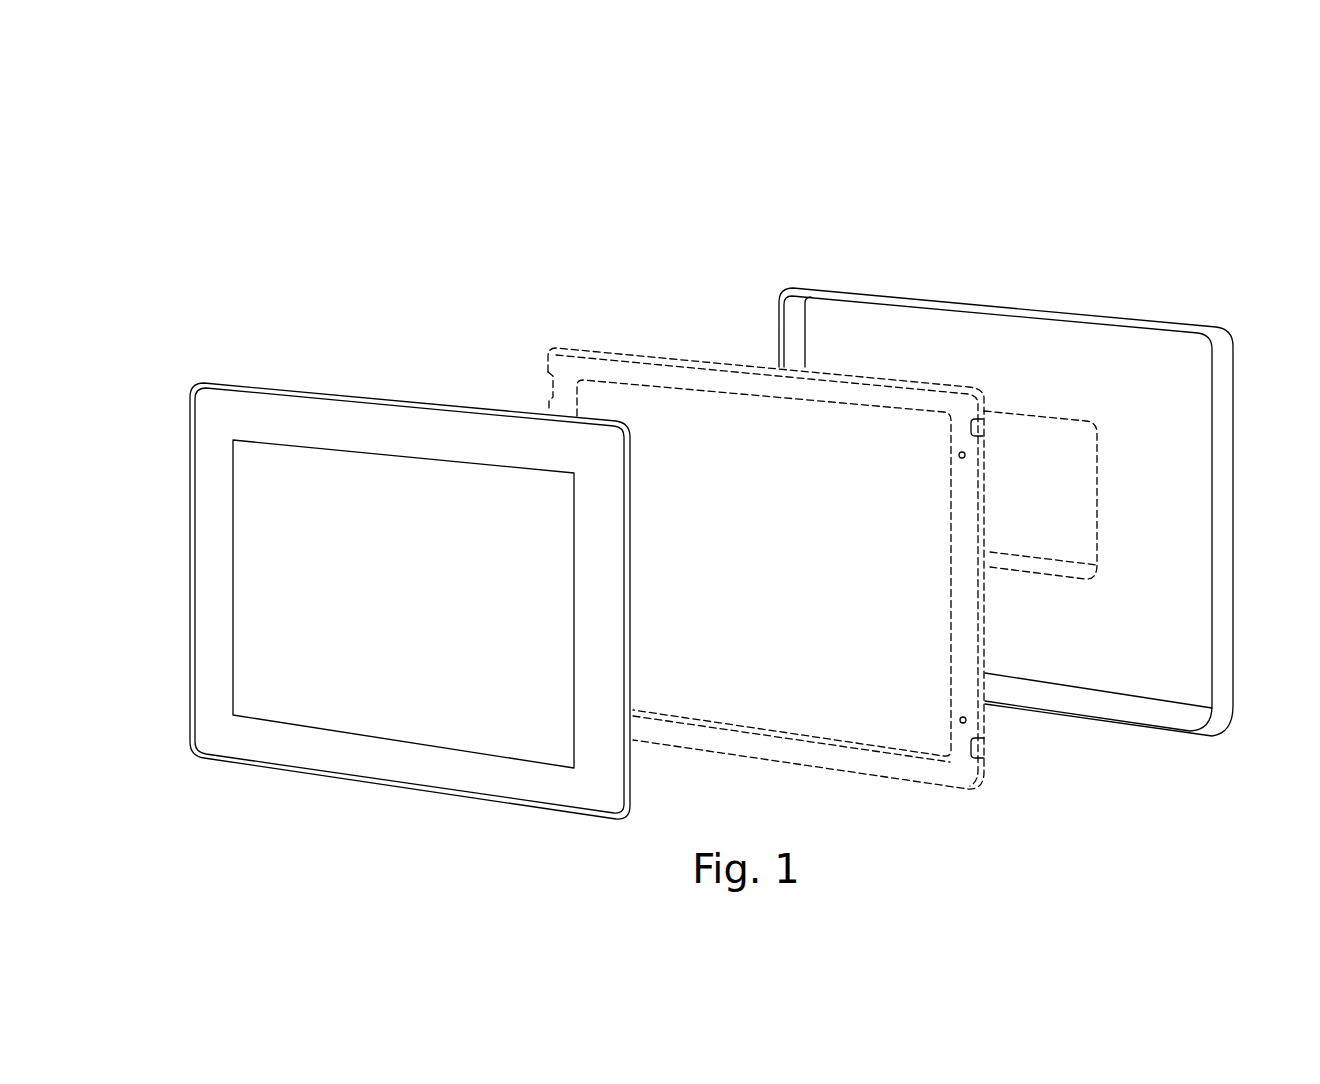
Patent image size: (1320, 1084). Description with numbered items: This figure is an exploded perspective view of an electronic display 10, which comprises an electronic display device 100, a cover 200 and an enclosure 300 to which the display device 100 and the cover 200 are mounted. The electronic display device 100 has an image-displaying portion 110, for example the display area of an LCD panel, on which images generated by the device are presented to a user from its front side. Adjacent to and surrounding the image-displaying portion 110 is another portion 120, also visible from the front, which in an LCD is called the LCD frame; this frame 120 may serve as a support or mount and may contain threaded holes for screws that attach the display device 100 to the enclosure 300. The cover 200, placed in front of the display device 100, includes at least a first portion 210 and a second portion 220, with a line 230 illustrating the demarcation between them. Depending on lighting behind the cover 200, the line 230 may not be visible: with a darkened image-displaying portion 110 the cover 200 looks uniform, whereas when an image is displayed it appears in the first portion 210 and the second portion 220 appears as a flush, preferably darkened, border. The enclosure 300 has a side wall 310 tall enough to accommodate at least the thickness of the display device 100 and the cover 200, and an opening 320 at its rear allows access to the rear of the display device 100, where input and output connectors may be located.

The electronic display 10 is at (626, 151).
The electronic display device 100 is at (930, 802).
The image-displaying portion 110 is at (705, 487).
The other portion 120 is at (745, 383).
The cover 200 is at (229, 778).
The first portion 210 is at (326, 607).
The second portion 220 is at (388, 427).
The line 230 is at (500, 467).
The enclosure 300 is at (1197, 752).
The side wall 310 is at (1065, 695).
The opening 320 is at (1042, 478).